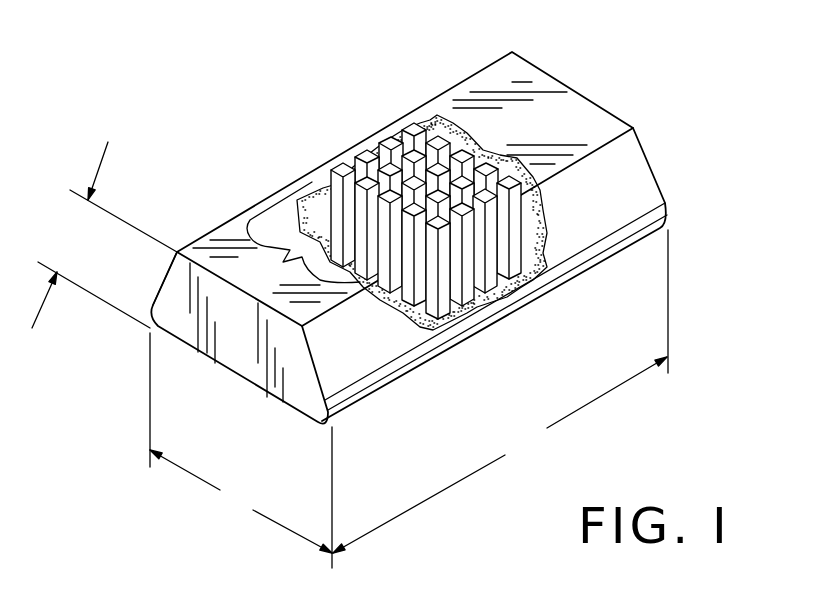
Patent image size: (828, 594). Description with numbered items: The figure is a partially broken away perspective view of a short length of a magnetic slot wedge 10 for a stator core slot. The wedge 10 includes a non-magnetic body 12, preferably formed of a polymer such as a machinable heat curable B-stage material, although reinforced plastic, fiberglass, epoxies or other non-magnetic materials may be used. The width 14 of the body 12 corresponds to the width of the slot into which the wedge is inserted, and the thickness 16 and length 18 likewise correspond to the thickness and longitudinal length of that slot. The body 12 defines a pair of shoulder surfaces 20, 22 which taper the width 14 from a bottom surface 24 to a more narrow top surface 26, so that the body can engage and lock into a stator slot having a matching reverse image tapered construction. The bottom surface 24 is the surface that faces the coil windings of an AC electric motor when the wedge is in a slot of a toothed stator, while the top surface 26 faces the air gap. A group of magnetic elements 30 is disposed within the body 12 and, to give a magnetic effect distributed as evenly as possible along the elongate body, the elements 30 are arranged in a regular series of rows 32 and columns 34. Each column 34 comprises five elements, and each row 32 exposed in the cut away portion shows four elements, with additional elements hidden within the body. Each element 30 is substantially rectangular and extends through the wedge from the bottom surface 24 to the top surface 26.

The magnetic slot wedge 10 is at (385, 247).
The non-magnetic body 12 is at (520, 75).
The width 14 is at (241, 450).
The thickness 16 is at (104, 235).
The length 18 is at (500, 391).
The shoulder surface 20 is at (152, 285).
The shoulder surface 22 is at (618, 172).
The bottom surface 24 is at (202, 358).
The top surface 26 is at (565, 128).
The magnetic elements 30 is at (435, 209).
The rows 32 is at (303, 235).
The columns 34 is at (487, 268).